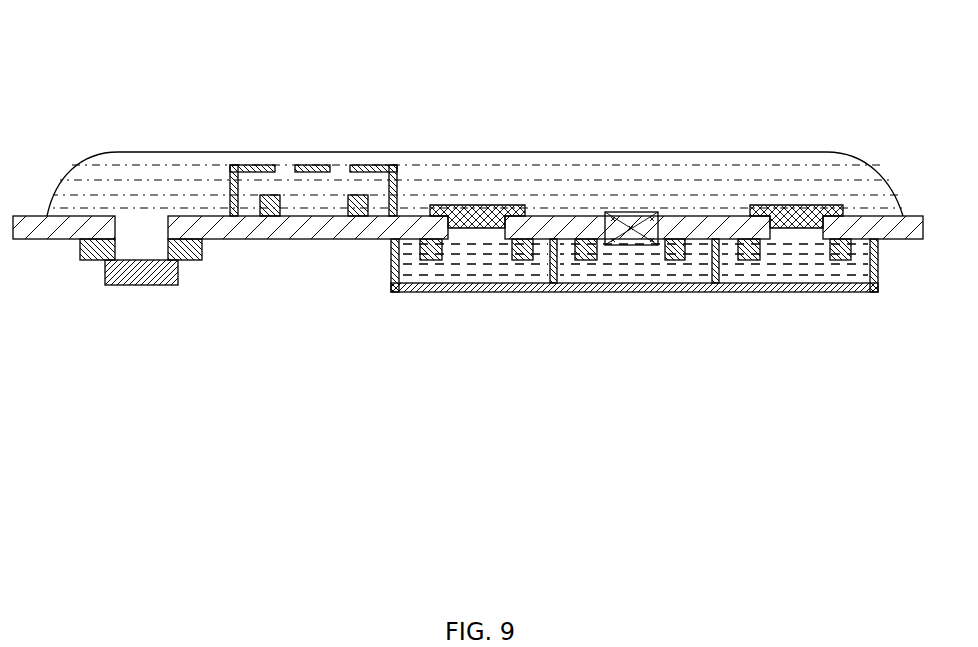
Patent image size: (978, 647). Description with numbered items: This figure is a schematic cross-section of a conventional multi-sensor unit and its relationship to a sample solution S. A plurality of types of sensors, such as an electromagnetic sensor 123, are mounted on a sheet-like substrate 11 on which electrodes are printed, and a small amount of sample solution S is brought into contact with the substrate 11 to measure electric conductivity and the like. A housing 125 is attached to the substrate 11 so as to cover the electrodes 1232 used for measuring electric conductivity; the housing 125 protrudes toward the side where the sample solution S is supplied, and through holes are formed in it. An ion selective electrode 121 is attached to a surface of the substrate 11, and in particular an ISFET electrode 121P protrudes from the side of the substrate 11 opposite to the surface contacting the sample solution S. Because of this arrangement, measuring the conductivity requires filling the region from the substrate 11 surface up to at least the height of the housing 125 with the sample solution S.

The sample solution S is at (380, 150).
The substrate 11 is at (64, 215).
The electromagnetic sensor 123 is at (306, 292).
The housing 125 is at (251, 164).
The electrodes 1232 is at (268, 217).
The ISFET electrode 121P is at (108, 309).
The ion selective electrode 121 is at (422, 354).